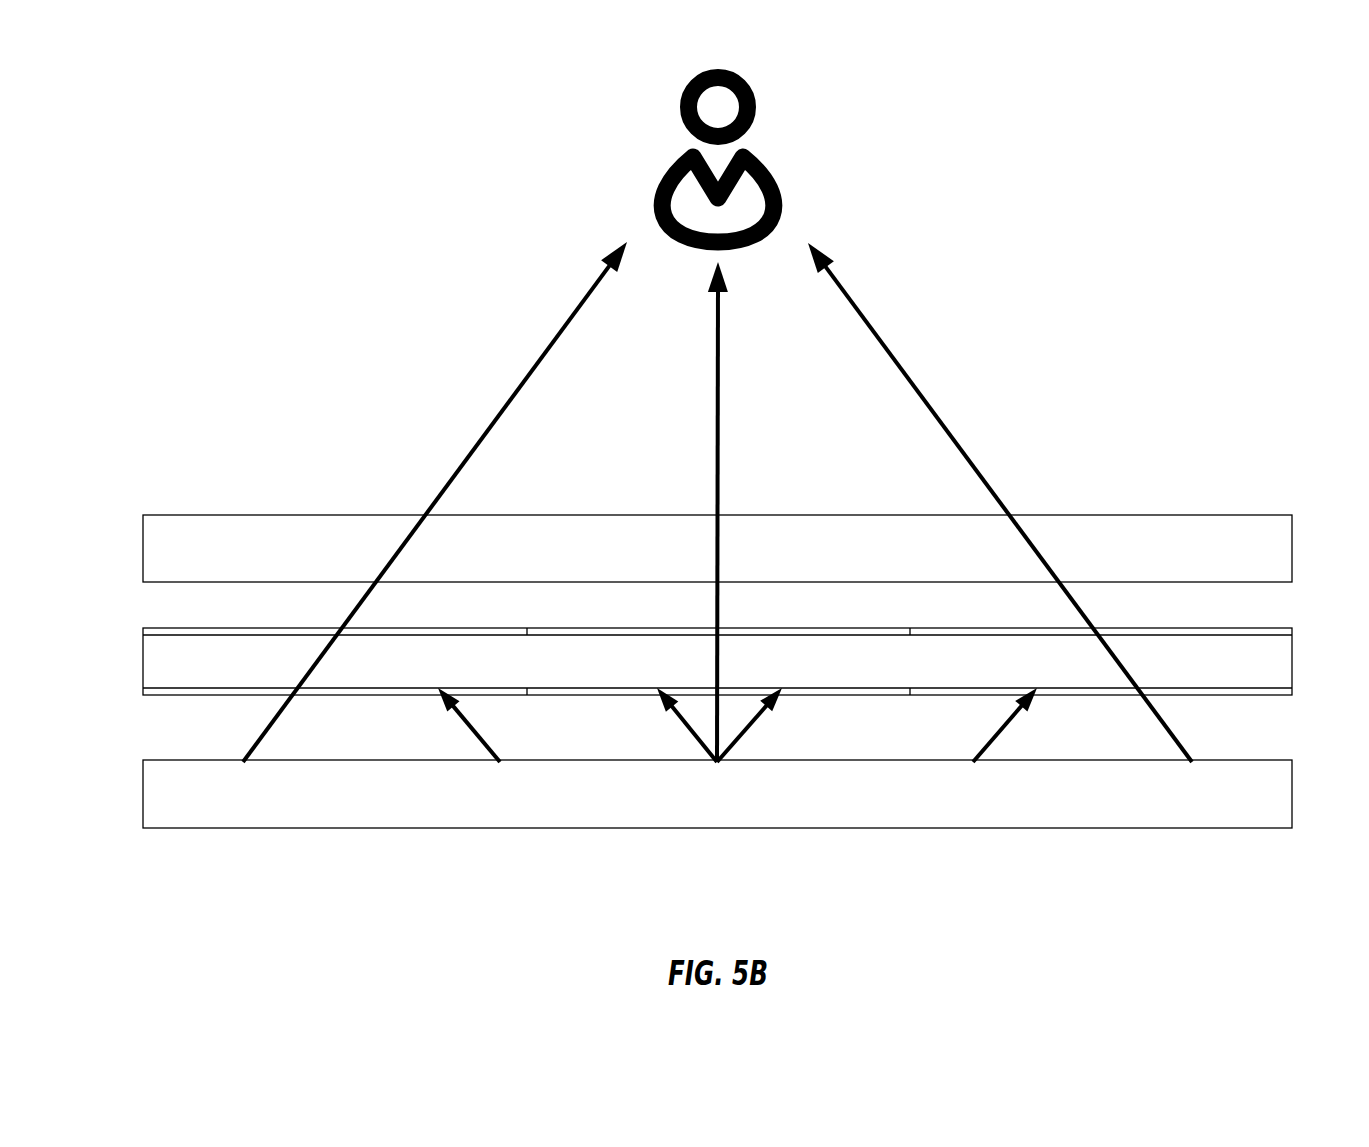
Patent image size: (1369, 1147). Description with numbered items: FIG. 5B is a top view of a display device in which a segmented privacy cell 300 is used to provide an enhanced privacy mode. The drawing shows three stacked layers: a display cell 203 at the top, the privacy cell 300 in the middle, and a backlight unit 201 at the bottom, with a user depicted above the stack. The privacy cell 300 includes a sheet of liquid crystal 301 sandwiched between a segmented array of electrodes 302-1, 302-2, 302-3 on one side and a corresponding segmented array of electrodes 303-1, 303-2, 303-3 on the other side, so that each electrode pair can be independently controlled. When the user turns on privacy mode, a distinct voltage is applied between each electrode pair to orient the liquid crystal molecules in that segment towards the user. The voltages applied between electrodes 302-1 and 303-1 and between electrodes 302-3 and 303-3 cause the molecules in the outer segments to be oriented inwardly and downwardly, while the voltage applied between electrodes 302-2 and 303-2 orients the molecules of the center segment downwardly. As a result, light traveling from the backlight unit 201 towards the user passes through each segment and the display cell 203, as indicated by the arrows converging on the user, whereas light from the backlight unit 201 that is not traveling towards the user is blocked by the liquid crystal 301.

The privacy cell 300 is at (133, 610).
The display cell 203 is at (717, 548).
The sheet of liquid crystal 301 is at (150, 672).
The electrode 302-1 is at (244, 624).
The electrode 302-2 is at (560, 622).
The electrode 302-3 is at (1240, 622).
The electrode 303-1 is at (152, 702).
The electrode 303-2 is at (624, 702).
The electrode 303-3 is at (1253, 702).
The backlight unit 201 is at (717, 794).